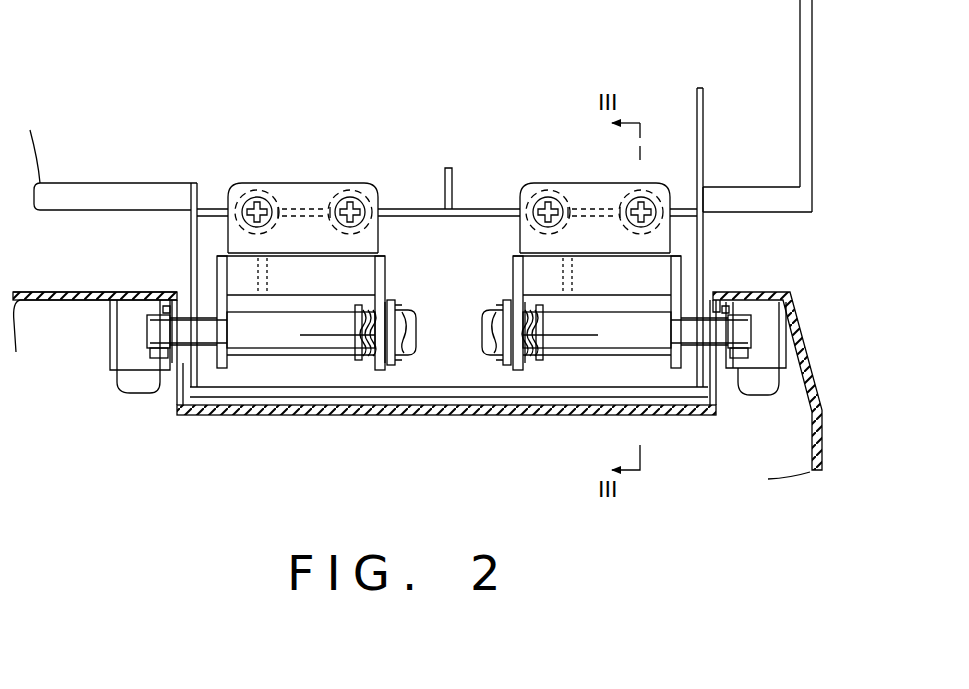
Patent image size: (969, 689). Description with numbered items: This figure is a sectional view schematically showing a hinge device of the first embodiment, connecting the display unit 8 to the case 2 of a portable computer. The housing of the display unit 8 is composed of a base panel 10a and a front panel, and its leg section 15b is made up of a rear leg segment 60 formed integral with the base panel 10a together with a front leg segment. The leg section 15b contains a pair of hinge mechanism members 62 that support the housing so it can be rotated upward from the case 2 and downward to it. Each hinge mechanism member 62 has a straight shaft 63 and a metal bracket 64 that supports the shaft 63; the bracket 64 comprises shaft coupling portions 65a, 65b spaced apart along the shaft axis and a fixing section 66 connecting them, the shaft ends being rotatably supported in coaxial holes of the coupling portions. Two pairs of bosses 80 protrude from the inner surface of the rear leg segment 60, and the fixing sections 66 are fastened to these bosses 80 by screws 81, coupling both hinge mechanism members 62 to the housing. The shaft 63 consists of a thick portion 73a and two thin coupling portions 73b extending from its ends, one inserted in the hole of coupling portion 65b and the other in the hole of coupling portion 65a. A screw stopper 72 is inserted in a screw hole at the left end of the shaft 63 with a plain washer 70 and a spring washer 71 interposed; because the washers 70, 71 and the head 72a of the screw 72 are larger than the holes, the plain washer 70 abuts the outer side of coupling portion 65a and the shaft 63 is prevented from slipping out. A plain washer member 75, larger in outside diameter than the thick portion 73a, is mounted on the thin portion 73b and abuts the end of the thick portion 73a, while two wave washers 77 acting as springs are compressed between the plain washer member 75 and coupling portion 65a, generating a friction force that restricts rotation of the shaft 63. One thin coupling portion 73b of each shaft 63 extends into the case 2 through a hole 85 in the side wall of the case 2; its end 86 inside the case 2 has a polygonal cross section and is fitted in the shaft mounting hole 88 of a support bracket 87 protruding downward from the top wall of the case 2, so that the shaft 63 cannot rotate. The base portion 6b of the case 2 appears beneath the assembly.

The case 2 is at (818, 378).
The base channel 6b is at (262, 410).
The display unit 8 is at (818, 27).
The base panel 10a is at (786, 92).
The leg section 15b is at (190, 240).
The rear leg segment 60 is at (690, 278).
The hinge mechanism member 62 is at (688, 234).
The shaft 63 is at (338, 348).
The bracket 64 is at (297, 195).
The shaft coupling portion 65a is at (382, 262).
The shaft coupling portion 65b is at (218, 272).
The fixing section 66 is at (318, 183).
The plain washer 70 is at (390, 300).
The spring washer 71 is at (415, 345).
The screw stopper 72 is at (400, 365).
The head of the screw 72a is at (410, 355).
The thick portion 73a is at (292, 345).
The thin coupling portion 73b is at (174, 360).
The plain washer member 75 is at (345, 320).
The wave washer 77 is at (358, 305).
The boss 80 is at (257, 195).
The screw 81 is at (245, 199).
The hole 85 is at (175, 355).
The end of the thin coupling portion 86 is at (150, 328).
The support bracket 87 is at (125, 385).
The shaft mounting hole 88 is at (155, 345).